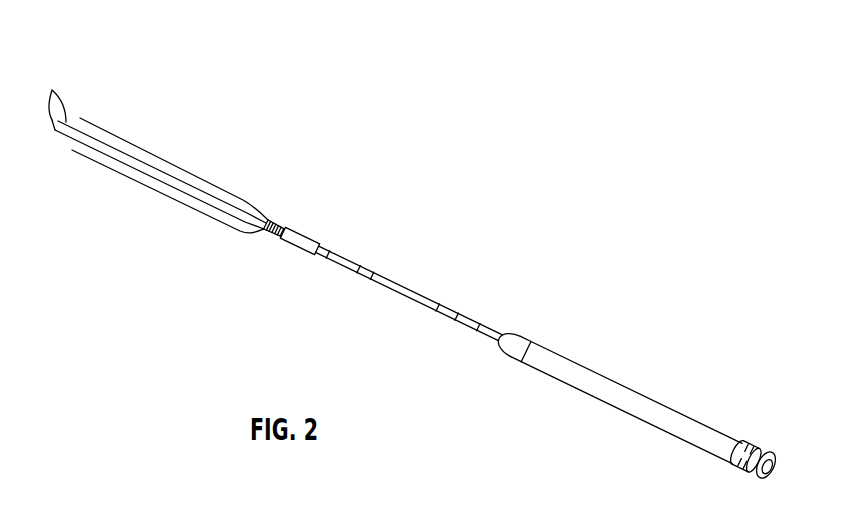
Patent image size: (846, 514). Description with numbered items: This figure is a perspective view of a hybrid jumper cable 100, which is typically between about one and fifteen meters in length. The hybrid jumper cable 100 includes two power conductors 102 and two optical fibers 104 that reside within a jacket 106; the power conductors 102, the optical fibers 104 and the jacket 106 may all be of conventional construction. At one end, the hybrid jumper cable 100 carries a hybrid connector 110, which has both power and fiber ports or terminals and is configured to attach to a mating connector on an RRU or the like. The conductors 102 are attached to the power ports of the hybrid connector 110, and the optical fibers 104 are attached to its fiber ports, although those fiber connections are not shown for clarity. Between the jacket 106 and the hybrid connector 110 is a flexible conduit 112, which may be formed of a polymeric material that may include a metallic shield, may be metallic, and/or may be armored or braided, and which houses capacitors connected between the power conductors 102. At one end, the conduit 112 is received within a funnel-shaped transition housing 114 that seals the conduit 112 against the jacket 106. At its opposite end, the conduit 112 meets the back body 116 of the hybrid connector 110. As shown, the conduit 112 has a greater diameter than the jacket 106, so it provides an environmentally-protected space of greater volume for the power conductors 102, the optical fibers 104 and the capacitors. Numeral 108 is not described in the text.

The hybrid jumper cable 100 is at (419, 209).
The power conductors 102 is at (52, 90).
The optical fibers 104 is at (153, 187).
The jacket 106 is at (423, 303).
The neck connector 108 is at (292, 237).
The hybrid connector 110 is at (756, 481).
The flexible conduit 112 is at (597, 386).
The funnel-shaped transition housing 114 is at (503, 348).
The back body 116 is at (755, 452).